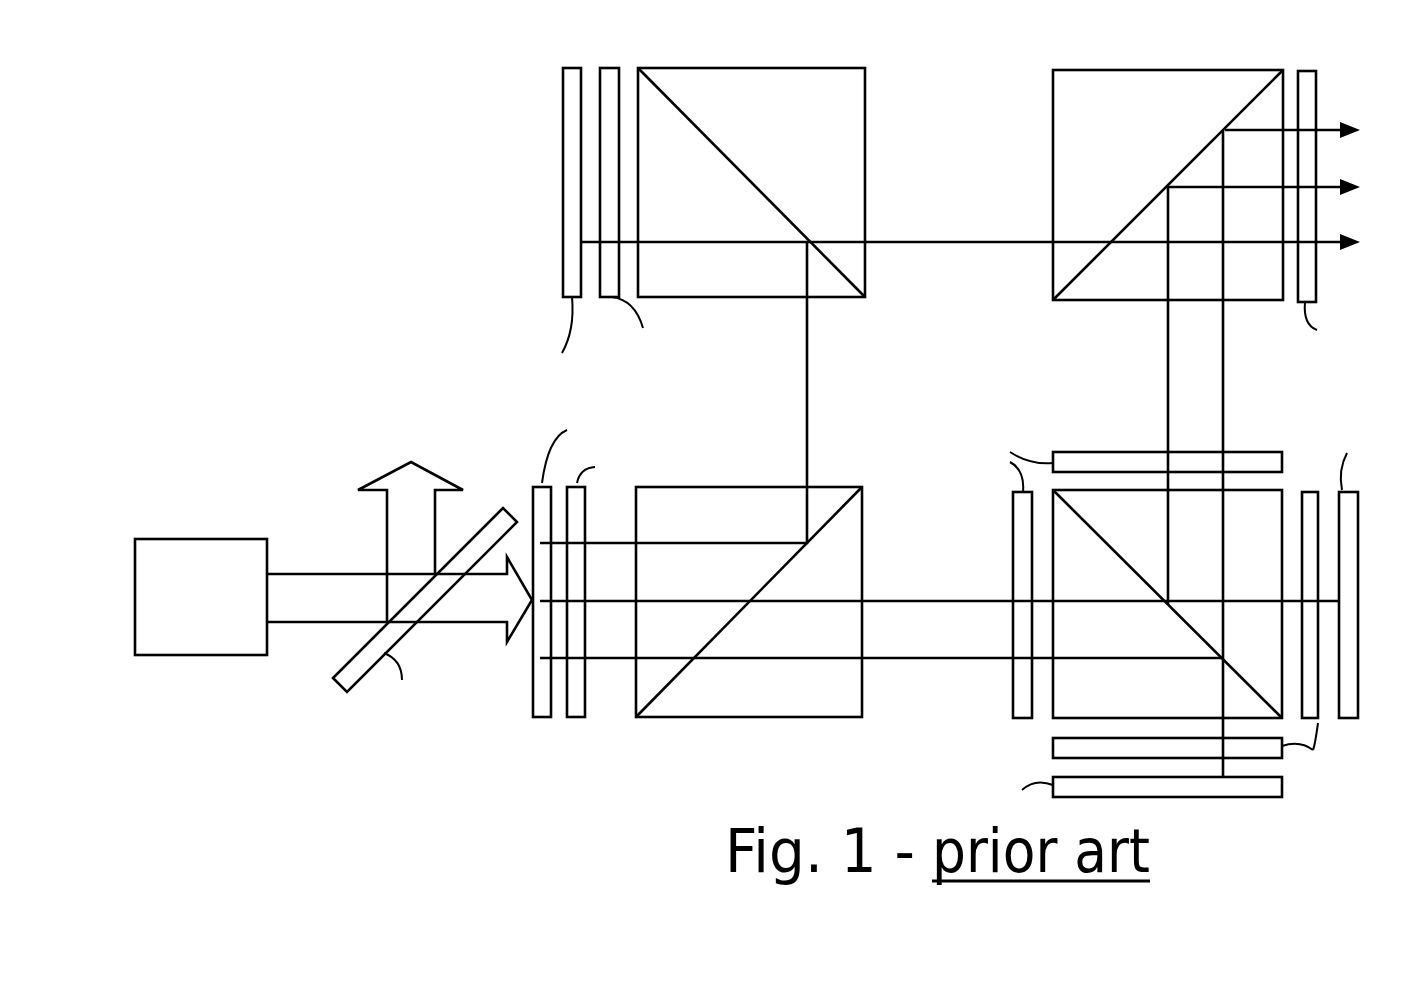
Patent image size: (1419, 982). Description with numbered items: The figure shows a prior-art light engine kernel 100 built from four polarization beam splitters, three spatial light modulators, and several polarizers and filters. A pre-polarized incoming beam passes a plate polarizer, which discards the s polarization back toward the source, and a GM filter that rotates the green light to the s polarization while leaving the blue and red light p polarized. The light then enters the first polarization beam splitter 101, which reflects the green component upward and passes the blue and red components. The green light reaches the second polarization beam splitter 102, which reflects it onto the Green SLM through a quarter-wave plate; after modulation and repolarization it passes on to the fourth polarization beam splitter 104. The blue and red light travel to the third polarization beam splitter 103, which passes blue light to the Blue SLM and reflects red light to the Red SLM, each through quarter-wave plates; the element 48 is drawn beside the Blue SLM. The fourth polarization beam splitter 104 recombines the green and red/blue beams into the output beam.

The light engine kernel 100 is at (452, 252).
The first polarization beam splitter 101 is at (731, 519).
The second polarization beam splitter 102 is at (734, 100).
The third polarization beam splitter 103 is at (1148, 711).
The fourth polarization beam splitter 104 is at (1151, 103).
The quarter wave plate and blue SLM 48 is at (1267, 563).